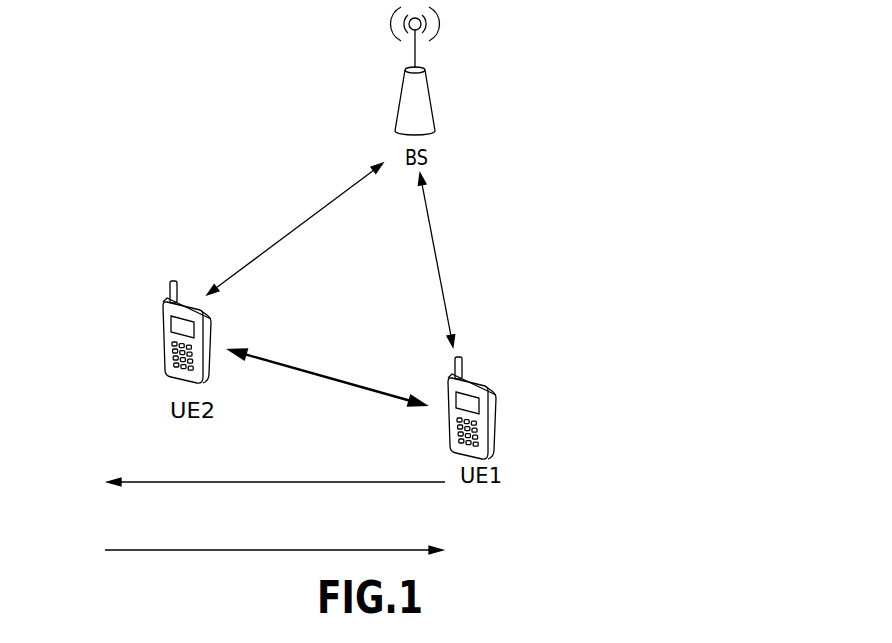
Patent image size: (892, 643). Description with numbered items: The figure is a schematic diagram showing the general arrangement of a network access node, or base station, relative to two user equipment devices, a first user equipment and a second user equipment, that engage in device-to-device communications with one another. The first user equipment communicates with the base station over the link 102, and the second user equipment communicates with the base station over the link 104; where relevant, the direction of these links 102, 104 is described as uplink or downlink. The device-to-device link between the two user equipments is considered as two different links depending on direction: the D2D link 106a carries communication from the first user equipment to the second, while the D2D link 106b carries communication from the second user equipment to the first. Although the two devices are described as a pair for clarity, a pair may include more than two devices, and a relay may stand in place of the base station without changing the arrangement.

The link between UE1 and the BS 102 is at (436, 253).
The link between UE2 and the BS 104 is at (297, 222).
The D2D link from UE1 to UE2 106a is at (276, 469).
The D2D link from UE2 to UE1 106b is at (274, 538).